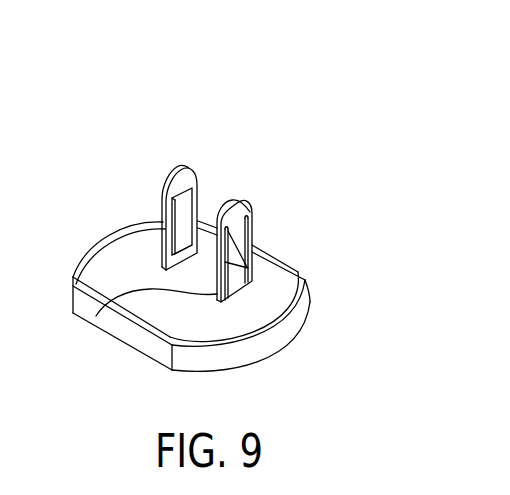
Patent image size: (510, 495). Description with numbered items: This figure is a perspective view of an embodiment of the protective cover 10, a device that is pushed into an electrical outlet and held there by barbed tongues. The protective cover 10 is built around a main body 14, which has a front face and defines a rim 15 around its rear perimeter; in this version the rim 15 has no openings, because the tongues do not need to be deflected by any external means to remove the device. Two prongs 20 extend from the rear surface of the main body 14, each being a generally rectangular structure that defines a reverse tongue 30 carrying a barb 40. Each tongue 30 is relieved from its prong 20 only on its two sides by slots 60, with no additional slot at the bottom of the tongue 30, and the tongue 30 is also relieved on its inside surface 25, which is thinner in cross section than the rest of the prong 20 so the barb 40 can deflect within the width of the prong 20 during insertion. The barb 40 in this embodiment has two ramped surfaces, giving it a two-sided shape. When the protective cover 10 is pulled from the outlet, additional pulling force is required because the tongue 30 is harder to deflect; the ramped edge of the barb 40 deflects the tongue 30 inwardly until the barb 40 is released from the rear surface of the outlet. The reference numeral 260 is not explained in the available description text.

The protective cover 10 is at (306, 126).
The main body 14 is at (236, 302).
The rim 15 is at (304, 292).
The prong 20 is at (210, 256).
The inside surface 25 is at (178, 237).
The reverse tongue 30 is at (236, 283).
The barb 40 is at (277, 287).
The slot 60 is at (116, 298).
The side wall 260 is at (310, 311).